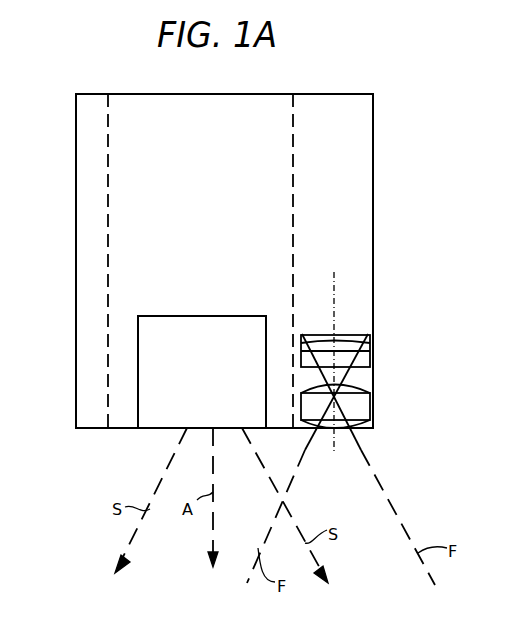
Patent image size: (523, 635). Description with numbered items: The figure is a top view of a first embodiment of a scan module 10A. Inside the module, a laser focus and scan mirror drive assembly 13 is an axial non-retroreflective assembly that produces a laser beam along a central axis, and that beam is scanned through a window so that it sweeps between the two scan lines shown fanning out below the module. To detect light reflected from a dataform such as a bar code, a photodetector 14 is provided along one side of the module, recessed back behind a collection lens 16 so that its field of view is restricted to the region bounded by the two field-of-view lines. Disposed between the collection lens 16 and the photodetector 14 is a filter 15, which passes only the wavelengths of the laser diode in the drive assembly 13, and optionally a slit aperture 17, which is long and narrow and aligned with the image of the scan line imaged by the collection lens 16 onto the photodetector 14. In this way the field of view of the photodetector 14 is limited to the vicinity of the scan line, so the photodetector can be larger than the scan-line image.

The scan module 10A is at (76, 428).
The laser focus and scan mirror drive assembly 13 is at (293, 145).
The photodetector 14 is at (350, 342).
The filter 15 is at (372, 365).
The collection lens 16 is at (363, 412).
The slit aperture 17 is at (366, 352).